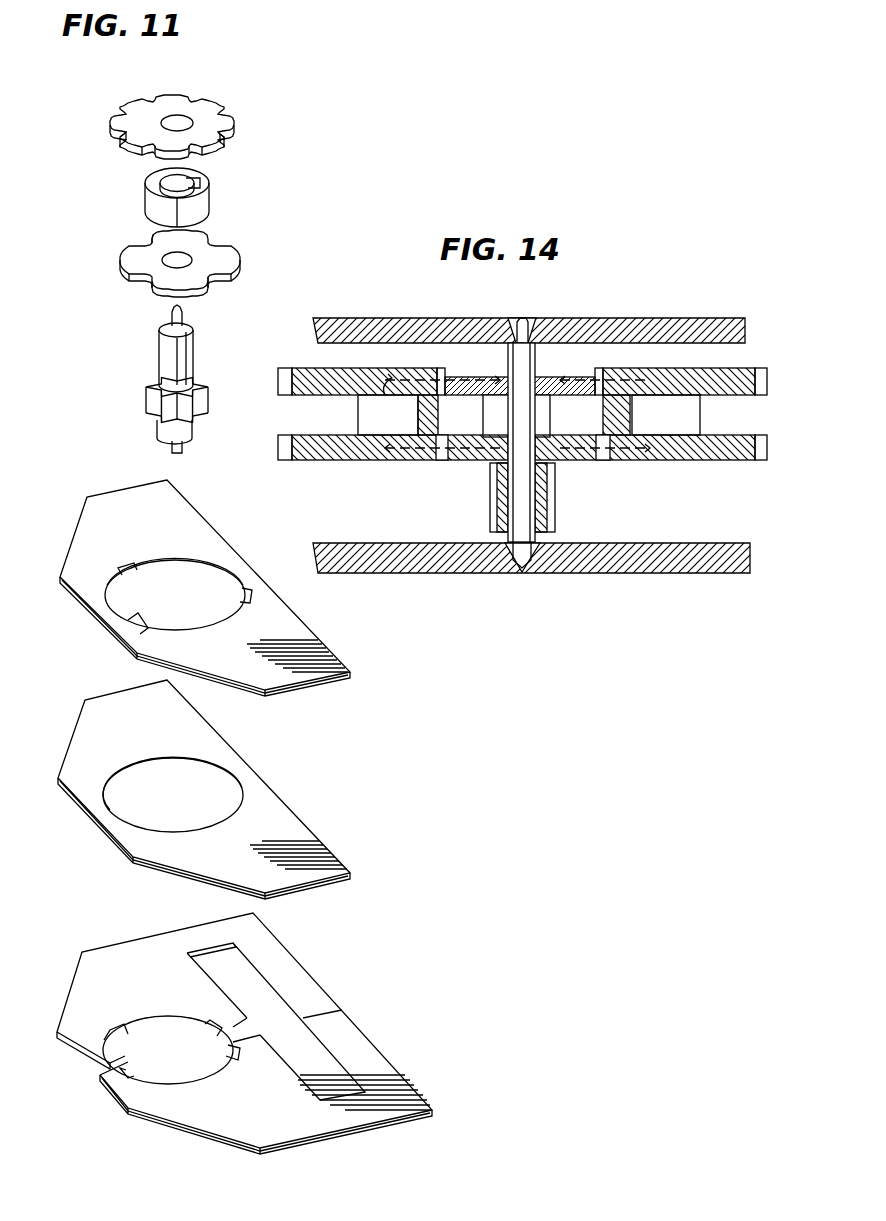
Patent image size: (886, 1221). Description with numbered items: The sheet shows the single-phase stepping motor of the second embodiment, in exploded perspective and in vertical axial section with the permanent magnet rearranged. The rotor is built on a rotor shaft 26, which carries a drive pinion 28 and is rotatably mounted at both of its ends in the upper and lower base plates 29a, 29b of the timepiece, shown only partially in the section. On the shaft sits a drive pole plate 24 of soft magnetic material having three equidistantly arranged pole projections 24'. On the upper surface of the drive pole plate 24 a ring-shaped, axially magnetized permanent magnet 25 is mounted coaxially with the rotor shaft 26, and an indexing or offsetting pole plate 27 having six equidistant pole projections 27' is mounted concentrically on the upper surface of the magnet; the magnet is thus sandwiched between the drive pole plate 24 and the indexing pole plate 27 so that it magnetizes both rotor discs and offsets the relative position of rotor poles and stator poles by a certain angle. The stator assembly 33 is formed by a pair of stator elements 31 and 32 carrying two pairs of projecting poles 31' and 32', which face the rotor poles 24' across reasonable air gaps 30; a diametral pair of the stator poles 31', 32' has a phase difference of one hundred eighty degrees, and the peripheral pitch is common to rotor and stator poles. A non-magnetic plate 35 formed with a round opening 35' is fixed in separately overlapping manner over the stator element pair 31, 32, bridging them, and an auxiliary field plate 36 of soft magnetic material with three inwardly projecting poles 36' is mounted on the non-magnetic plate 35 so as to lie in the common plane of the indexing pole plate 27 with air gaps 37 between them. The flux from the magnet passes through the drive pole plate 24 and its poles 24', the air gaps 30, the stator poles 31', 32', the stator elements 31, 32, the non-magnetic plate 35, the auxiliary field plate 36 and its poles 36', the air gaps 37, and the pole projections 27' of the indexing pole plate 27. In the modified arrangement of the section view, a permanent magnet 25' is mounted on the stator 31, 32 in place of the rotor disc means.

In FIG. 11, the drive pole plate 24 is at (196, 259).
In FIG. 11, the pole projections 24' is at (187, 264).
In FIG. 11, the ring-shaped permanent magnet 25 is at (197, 197).
In FIG. 14, the ring-shaped permanent magnet 25 is at (687, 415).
In FIG. 14, the permanent magnet 25' is at (360, 415).
In FIG. 11, the rotor shaft 26 is at (195, 352).
In FIG. 14, the rotor shaft 26 is at (535, 363).
In FIG. 11, the indexing pole plate 27 is at (193, 122).
In FIG. 14, the indexing pole plate 27 is at (520, 392).
In FIG. 11, the pole projections 27' is at (179, 130).
In FIG. 11, the pinion gear / bearing 28 is at (208, 398).
In FIG. 14, the pinion gear / bearing 28 is at (547, 510).
In FIG. 14, the upper frame plate 29a is at (745, 322).
In FIG. 14, the lower frame plate 29b is at (746, 560).
In FIG. 14, the air gap 30 is at (442, 455).
In FIG. 11, the stator element 31 is at (143, 1009).
In FIG. 14, the stator element 31 is at (393, 467).
In FIG. 11, the projecting poles 31' is at (124, 1013).
In FIG. 11, the stator element 32 is at (180, 1104).
In FIG. 14, the stator element 32 is at (651, 467).
In FIG. 11, the projecting poles 32' is at (202, 1080).
In FIG. 11, the lower stator plate assembly 33 is at (311, 986).
In FIG. 11, the non-magnetic plate 35 is at (204, 789).
In FIG. 14, the non-magnetic plate 35 is at (597, 415).
In FIG. 11, the round opening 35' is at (144, 800).
In FIG. 11, the auxiliary field plate 36 is at (205, 588).
In FIG. 14, the auxiliary field plate 36 is at (528, 369).
In FIG. 11, the inwardly projecting poles 36' is at (164, 583).
In FIG. 14, the air gaps 37 is at (436, 374).